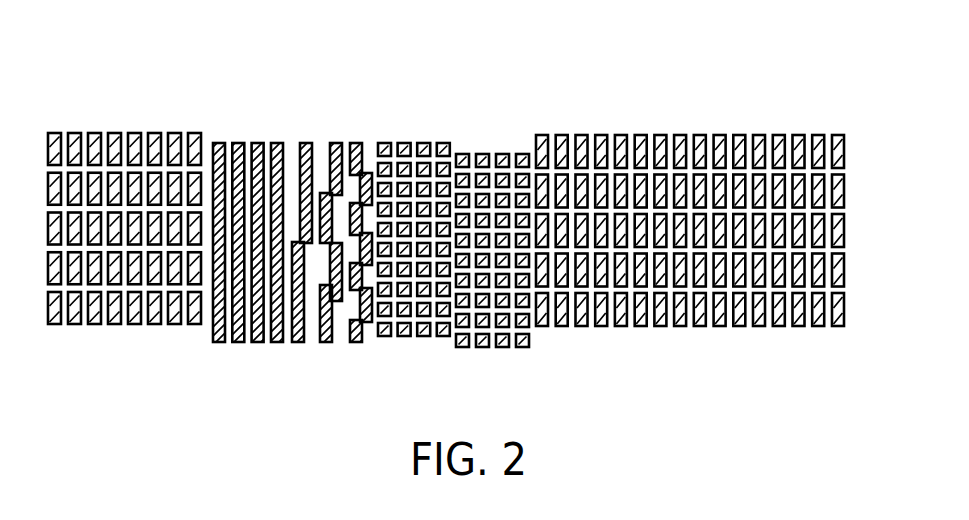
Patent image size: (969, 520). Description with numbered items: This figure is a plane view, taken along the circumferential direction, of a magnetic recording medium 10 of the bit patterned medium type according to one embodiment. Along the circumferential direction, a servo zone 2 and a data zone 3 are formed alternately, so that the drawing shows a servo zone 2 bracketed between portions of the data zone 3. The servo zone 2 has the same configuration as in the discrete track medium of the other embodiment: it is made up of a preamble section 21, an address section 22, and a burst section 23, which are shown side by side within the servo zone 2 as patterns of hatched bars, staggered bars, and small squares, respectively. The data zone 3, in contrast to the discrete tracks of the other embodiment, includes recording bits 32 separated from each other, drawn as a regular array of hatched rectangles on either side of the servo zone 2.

The display device 10 is at (195, 101).
The servo zone 2 is at (527, 122).
The data zone 3 is at (842, 123).
The preamble section 21 is at (282, 360).
The address section 22 is at (370, 360).
The burst section 23 is at (528, 360).
The recording bit 32 is at (845, 150).